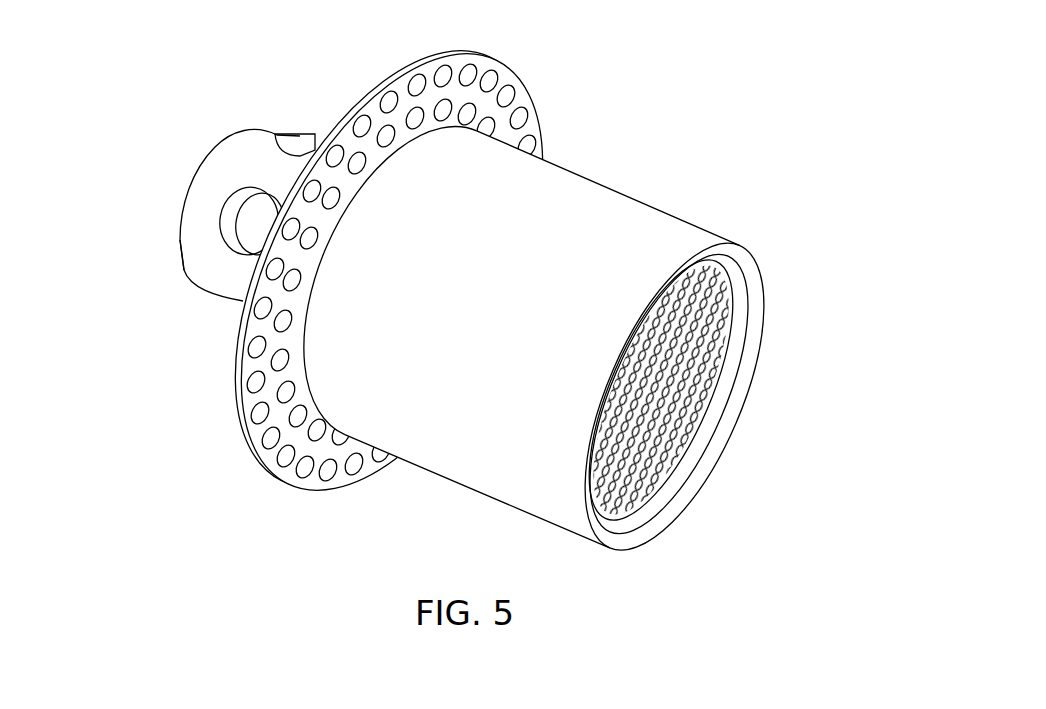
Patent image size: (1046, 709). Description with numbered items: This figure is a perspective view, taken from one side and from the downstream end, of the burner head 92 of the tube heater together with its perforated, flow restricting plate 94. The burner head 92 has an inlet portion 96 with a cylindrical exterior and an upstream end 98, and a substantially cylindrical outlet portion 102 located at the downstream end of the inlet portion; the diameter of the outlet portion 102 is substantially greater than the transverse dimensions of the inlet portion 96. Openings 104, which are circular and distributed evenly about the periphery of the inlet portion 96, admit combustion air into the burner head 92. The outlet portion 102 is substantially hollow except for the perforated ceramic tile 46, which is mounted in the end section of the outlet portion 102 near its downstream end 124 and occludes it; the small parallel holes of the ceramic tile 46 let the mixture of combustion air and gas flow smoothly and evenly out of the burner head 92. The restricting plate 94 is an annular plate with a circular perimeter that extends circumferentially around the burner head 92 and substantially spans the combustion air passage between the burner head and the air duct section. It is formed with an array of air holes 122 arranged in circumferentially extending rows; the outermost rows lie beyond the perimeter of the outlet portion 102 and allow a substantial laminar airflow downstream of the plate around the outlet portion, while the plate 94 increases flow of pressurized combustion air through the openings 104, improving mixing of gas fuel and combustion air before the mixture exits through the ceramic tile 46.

The burner head 92 is at (485, 289).
The restricting plate 94 is at (248, 383).
The inlet portion 96 is at (223, 167).
The upstream end 98 is at (182, 217).
The outlet portion 102 is at (667, 237).
The openings 104 is at (294, 148).
The air holes 122 is at (487, 80).
The downstream end 124 is at (740, 253).
The perforated ceramic tile 46 is at (688, 343).